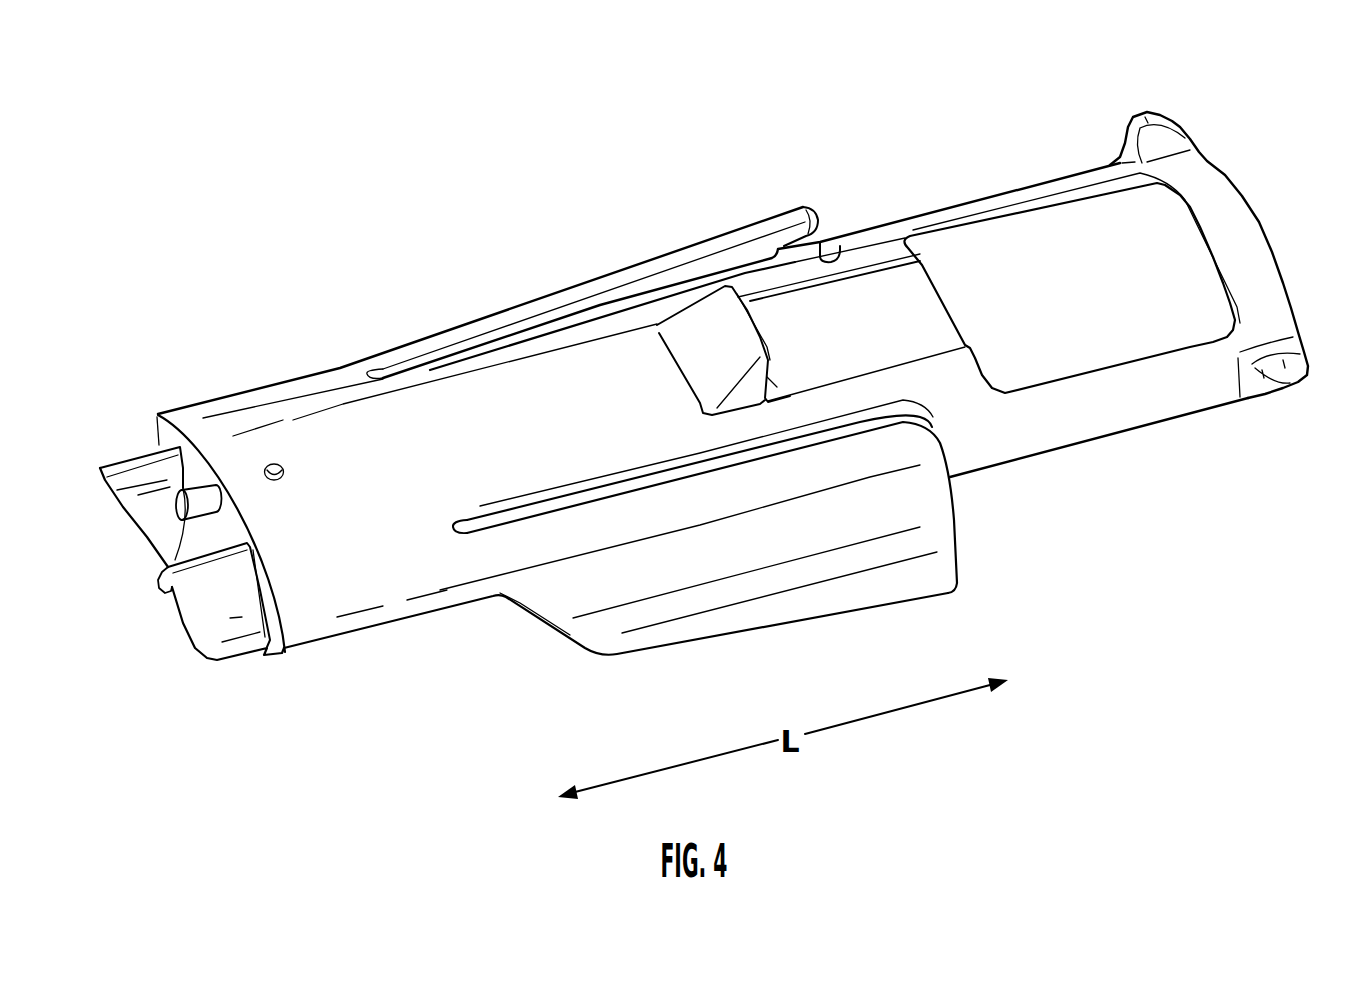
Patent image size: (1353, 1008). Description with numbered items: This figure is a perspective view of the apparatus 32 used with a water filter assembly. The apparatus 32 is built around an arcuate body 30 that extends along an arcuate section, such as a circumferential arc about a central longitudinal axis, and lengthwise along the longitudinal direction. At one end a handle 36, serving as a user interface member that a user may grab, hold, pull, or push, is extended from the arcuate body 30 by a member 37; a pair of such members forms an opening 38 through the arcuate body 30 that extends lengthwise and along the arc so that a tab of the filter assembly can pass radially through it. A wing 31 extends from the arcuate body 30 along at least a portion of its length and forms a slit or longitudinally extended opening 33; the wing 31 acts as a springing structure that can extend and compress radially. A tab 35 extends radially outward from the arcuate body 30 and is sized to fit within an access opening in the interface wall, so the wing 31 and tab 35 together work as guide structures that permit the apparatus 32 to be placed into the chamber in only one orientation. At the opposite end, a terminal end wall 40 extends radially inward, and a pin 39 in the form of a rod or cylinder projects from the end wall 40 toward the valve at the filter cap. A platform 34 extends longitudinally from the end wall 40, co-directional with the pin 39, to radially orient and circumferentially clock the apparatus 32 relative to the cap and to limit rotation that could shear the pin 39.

The arcuate body 30 is at (395, 427).
The wing 31 is at (581, 296).
The apparatus 32 is at (716, 101).
The longitudinally extended opening 33 is at (826, 230).
The platform 34 is at (218, 633).
The tab 35 is at (695, 330).
The handle 36 is at (1232, 222).
The member 37 is at (1098, 417).
The opening 38 is at (1034, 242).
The pin 39 is at (198, 494).
The terminal end wall 40 is at (208, 530).